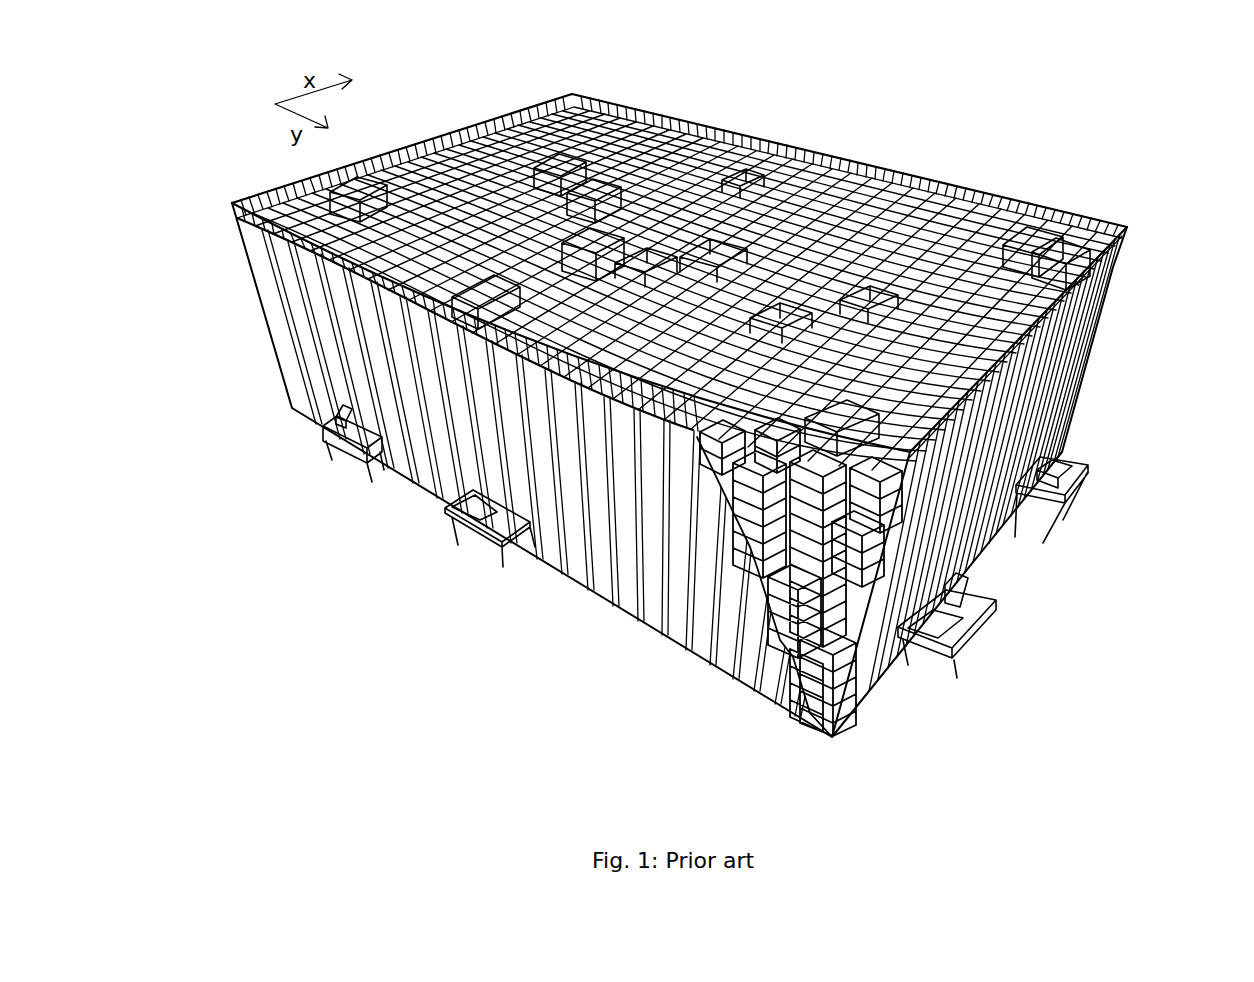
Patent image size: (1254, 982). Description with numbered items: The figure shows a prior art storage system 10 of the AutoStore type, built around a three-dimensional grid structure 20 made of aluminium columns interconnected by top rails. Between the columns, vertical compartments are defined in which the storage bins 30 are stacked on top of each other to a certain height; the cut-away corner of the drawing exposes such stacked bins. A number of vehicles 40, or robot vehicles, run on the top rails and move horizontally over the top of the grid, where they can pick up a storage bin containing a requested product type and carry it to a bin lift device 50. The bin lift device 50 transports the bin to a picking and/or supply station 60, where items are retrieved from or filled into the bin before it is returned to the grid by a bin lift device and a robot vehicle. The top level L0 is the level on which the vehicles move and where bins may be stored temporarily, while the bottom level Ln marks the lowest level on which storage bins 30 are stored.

The storage system 10 is at (212, 352).
The grid structure 20 is at (553, 110).
The storage bins 30 is at (830, 677).
The vehicles 40 is at (600, 235).
The bin lift device 50 is at (482, 443).
The picking and/or supply stations 60 is at (488, 528).
The top level L0 is at (1140, 251).
The bottom level Ln is at (1101, 453).